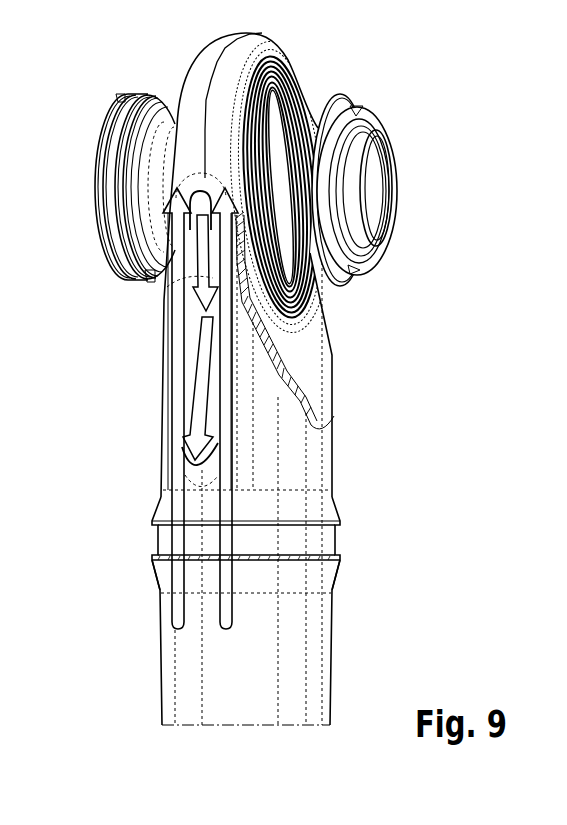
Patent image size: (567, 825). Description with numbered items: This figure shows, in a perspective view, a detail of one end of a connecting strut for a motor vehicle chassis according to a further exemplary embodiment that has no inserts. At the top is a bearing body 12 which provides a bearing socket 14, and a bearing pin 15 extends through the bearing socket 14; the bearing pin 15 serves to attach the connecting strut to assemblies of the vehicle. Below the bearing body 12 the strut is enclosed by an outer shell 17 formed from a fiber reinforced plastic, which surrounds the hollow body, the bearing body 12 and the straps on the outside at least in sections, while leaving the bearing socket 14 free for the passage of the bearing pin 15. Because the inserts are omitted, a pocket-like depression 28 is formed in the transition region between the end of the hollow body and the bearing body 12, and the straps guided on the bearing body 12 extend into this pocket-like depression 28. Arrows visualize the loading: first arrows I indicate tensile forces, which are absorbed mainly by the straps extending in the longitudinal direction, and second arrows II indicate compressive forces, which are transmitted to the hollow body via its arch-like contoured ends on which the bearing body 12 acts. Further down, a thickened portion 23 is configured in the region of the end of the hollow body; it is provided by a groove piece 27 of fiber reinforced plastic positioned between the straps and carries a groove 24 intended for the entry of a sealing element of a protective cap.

The bearing body 12 is at (278, 70).
The bearing socket 14 is at (276, 124).
The bearing pin 15 is at (370, 253).
The outer shell 17 is at (182, 688).
The thickened portion 23 is at (132, 580).
The groove piece 27 is at (185, 593).
The groove 24 is at (124, 548).
The pocket-like depression 28 is at (229, 411).
The first arrows I is at (172, 358).
The second arrows II is at (188, 283).